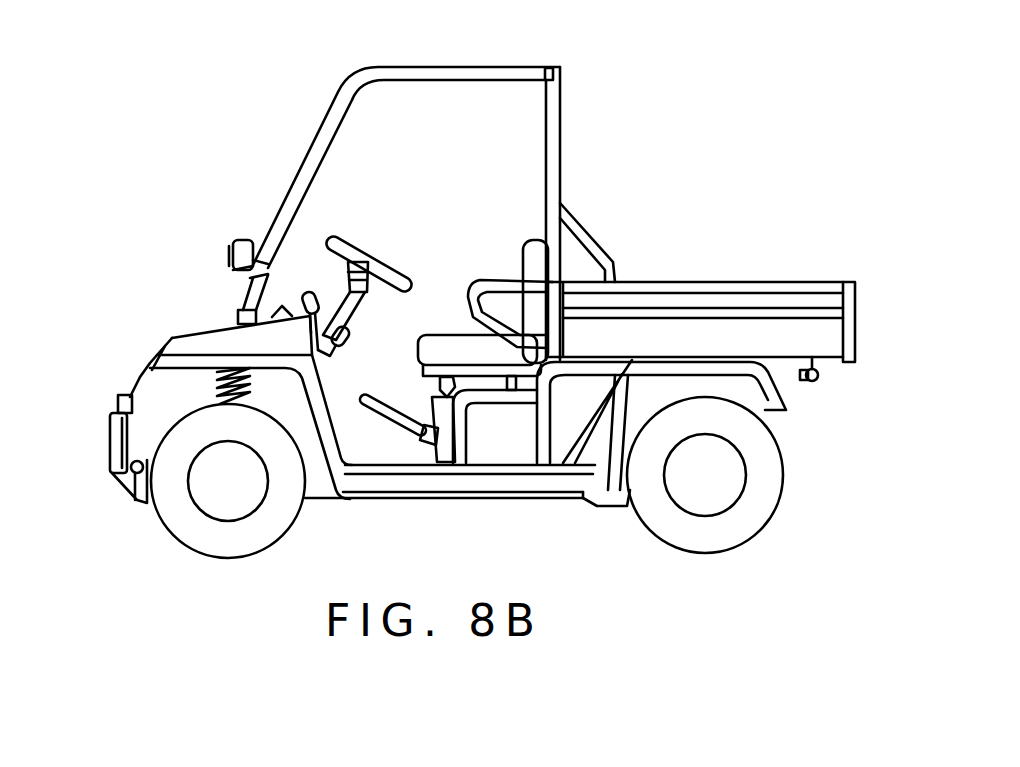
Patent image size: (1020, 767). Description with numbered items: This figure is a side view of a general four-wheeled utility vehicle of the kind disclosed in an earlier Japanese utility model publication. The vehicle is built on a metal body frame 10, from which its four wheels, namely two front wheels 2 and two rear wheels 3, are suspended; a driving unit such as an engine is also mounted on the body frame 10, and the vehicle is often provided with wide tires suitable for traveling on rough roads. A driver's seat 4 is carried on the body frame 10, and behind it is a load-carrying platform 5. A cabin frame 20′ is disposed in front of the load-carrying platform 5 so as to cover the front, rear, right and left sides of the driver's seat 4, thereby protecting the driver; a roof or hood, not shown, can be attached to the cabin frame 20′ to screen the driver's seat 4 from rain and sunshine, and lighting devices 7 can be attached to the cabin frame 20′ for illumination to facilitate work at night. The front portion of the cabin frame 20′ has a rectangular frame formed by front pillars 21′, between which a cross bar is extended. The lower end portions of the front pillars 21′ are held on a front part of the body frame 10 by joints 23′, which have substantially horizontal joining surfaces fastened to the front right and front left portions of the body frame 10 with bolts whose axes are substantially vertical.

The front wheels 2 is at (165, 522).
The rear wheels 3 is at (750, 525).
The driver's seat 4 is at (515, 252).
The load-carrying platform 5 is at (754, 328).
The lighting devices 7 is at (245, 238).
The body frame 10 is at (412, 482).
The cabin frame 20′ is at (576, 67).
The front pillars 21′ is at (328, 112).
The joints 23′ is at (228, 330).